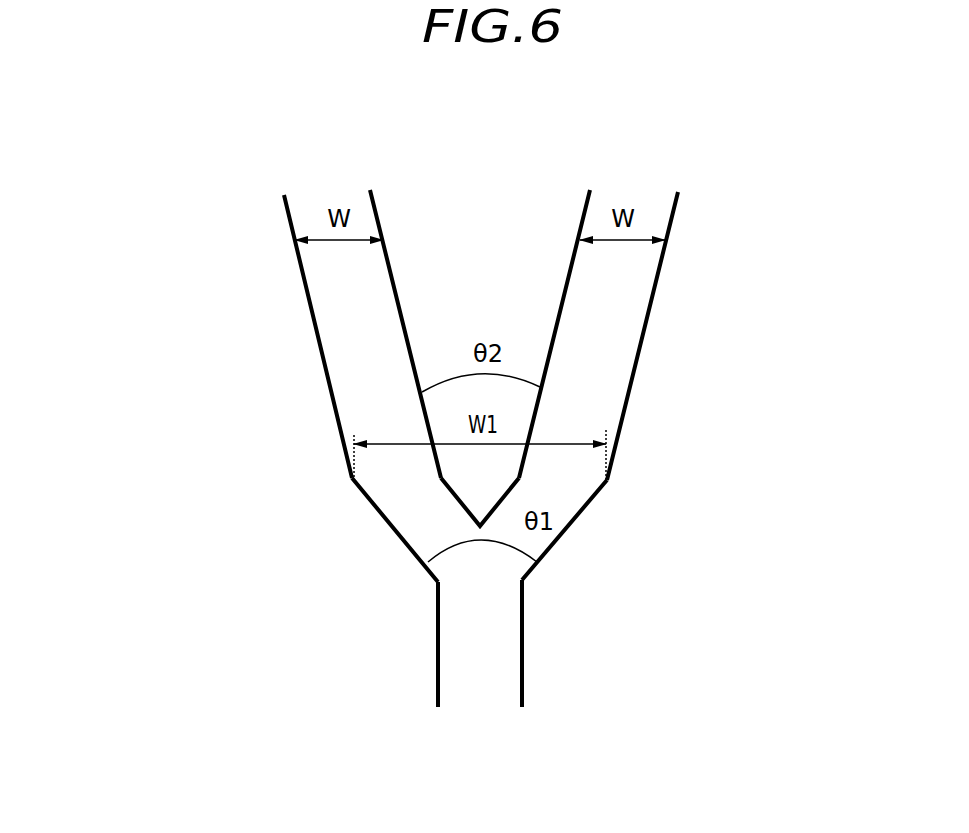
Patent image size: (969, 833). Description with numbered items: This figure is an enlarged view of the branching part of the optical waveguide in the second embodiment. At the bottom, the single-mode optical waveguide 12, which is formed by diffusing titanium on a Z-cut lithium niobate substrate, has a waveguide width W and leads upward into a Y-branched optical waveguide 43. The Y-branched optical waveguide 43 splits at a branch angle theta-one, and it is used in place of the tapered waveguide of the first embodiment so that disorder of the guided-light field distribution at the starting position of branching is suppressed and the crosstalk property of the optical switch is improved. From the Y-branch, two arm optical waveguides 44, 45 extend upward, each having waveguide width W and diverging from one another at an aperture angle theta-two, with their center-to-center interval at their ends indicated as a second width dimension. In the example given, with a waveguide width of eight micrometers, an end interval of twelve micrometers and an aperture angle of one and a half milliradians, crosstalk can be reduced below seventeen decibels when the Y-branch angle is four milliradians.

The arm optical waveguide 45 is at (320, 361).
The arm optical waveguide 44 is at (642, 354).
The Y-branched optical waveguide 43 is at (447, 523).
The single-mode optical waveguide 12 is at (434, 673).